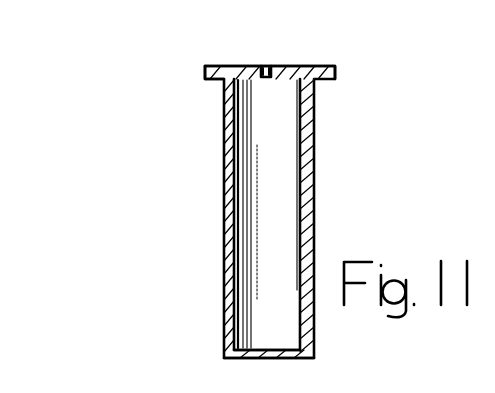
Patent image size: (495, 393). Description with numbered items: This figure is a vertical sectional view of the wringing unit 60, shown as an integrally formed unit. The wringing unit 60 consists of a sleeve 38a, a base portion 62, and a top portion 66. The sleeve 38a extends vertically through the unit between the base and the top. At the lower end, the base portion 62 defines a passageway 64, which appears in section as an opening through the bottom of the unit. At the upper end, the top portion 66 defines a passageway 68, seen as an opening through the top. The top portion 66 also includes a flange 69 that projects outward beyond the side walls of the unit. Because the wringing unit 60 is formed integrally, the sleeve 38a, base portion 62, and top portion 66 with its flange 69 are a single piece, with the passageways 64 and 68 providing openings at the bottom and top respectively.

The wringing unit 60 is at (360, 148).
The top portion 66 is at (300, 74).
The flange 69 is at (205, 72).
The passageway 68 is at (268, 70).
The sleeve 38a is at (308, 205).
The passageway 64 is at (268, 357).
The base portion 62 is at (285, 357).